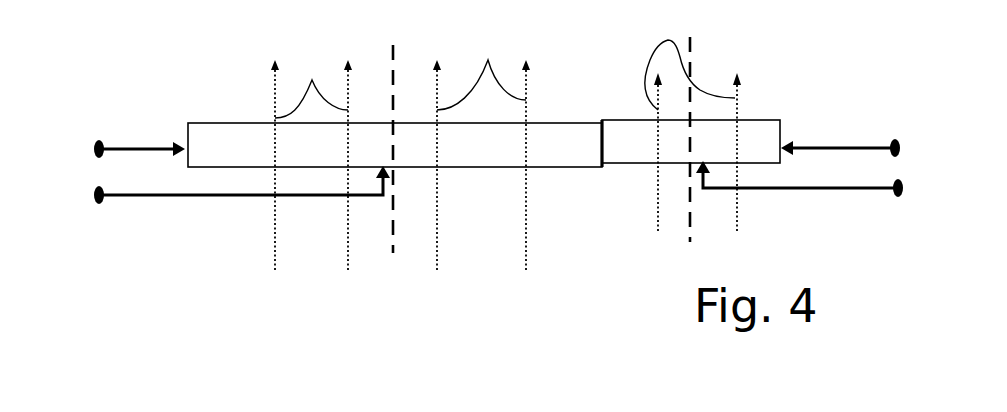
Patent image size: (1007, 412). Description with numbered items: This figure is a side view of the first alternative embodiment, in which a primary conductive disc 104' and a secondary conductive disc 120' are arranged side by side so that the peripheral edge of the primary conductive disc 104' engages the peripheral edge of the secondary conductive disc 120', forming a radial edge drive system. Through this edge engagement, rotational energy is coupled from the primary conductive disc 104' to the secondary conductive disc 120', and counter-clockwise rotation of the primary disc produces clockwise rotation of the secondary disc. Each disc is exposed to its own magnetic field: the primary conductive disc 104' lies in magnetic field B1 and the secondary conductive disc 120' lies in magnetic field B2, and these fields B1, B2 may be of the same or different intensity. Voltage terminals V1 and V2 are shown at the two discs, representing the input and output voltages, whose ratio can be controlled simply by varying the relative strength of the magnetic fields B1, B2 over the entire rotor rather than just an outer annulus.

The primary conductive disc 104' is at (395, 145).
The secondary conductive disc 120' is at (691, 143).
The magnetic field B1 is at (400, 77).
The magnetic field B2 is at (668, 40).
The first voltage terminals V1 is at (221, 172).
The second voltage terminals V2 is at (816, 168).